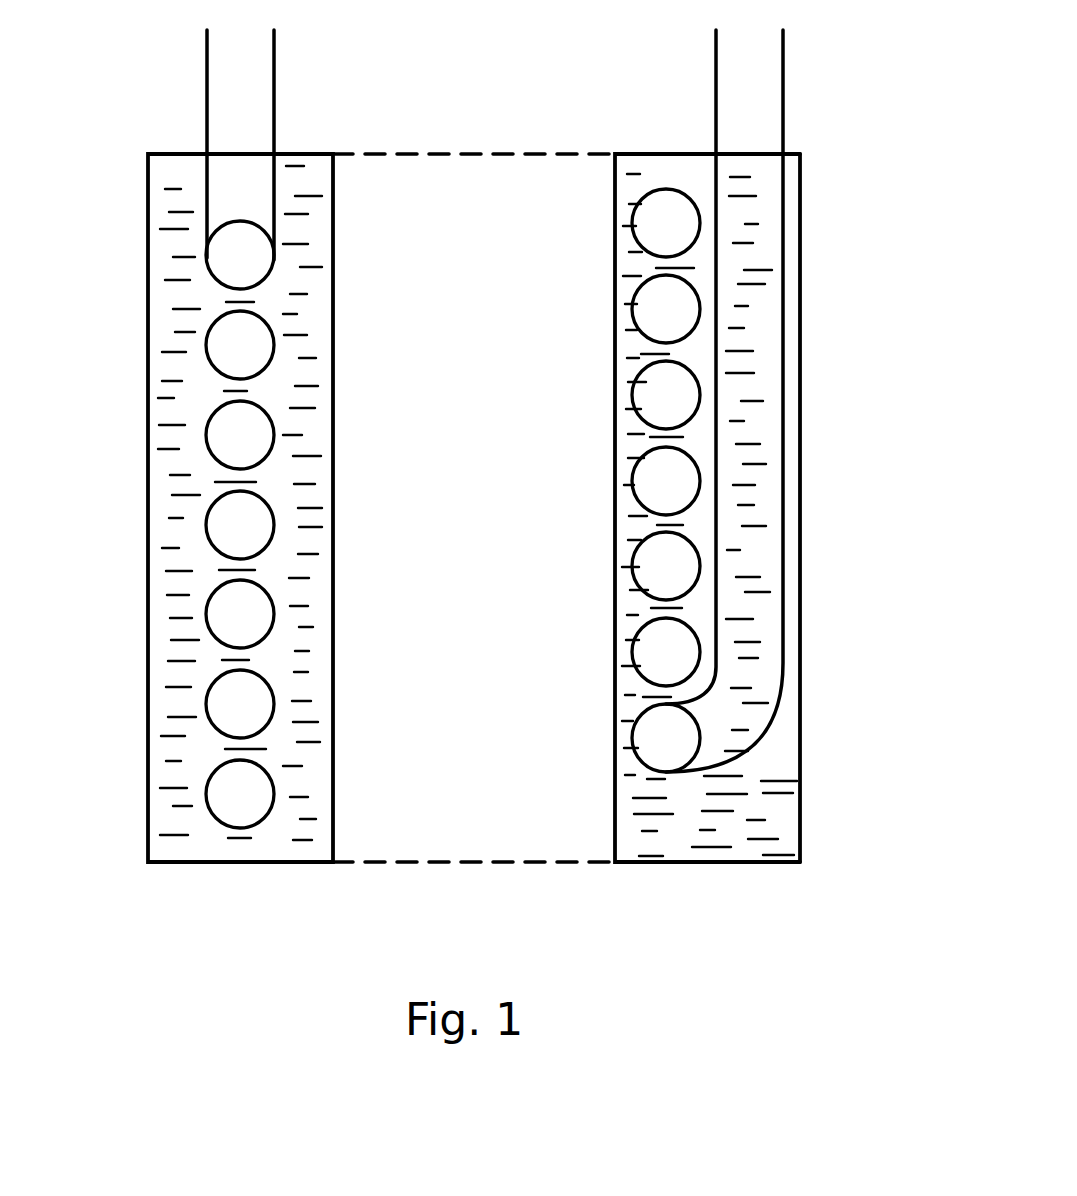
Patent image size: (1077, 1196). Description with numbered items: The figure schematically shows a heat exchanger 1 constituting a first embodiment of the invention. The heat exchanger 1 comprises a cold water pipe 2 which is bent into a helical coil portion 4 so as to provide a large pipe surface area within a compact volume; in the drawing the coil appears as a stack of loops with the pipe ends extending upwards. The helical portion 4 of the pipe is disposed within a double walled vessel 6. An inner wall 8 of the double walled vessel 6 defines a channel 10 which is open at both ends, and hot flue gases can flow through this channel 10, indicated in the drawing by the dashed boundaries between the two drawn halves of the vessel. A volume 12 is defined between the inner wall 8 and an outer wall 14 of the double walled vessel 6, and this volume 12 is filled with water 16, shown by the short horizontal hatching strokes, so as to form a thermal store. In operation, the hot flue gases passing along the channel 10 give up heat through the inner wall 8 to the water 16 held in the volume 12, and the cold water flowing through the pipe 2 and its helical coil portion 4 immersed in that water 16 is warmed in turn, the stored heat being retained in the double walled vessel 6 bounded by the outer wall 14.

The heat exchanger 1 is at (463, 473).
The cold water pipe 2 is at (714, 100).
The helical coil portion 4 is at (111, 222).
The double walled vessel 6 is at (800, 805).
The inner wall 8 is at (333, 838).
The channel 10 is at (493, 838).
The volume 12 is at (700, 840).
The outer wall 14 is at (800, 562).
The water 16 is at (762, 437).